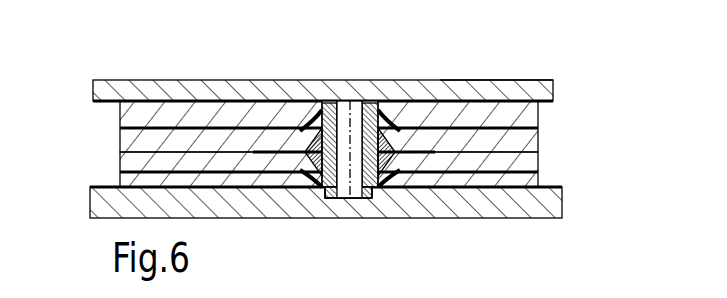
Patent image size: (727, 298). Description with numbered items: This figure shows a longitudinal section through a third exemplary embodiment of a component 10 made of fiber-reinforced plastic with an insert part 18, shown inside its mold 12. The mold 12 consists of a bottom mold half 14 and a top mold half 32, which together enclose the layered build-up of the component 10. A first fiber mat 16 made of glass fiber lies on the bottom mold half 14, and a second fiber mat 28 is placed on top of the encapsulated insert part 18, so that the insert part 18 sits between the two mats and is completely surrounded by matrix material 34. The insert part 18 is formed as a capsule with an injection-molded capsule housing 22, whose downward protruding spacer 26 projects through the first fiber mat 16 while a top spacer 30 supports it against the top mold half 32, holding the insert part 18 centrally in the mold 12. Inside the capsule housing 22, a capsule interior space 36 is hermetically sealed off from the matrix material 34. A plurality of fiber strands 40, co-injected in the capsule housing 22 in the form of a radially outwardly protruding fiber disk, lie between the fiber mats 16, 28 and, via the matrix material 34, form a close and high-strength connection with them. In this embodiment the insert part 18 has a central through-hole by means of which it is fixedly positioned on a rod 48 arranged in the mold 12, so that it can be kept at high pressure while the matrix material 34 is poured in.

The component 10 is at (87, 117).
The mold 12 is at (124, 62).
The bottom mold half 14 is at (533, 213).
The first fiber mat 16 is at (537, 162).
The insert part 18 is at (306, 126).
The capsule housing 22 is at (384, 190).
The spacer 26 is at (325, 188).
The second fiber mat 28 is at (528, 141).
The top spacer 30 is at (337, 101).
The top mold half 32 is at (520, 82).
The matrix material 34 is at (540, 143).
The capsule interior space 36 is at (372, 122).
The fiber strands 40 is at (420, 175).
The rod 48 is at (357, 200).